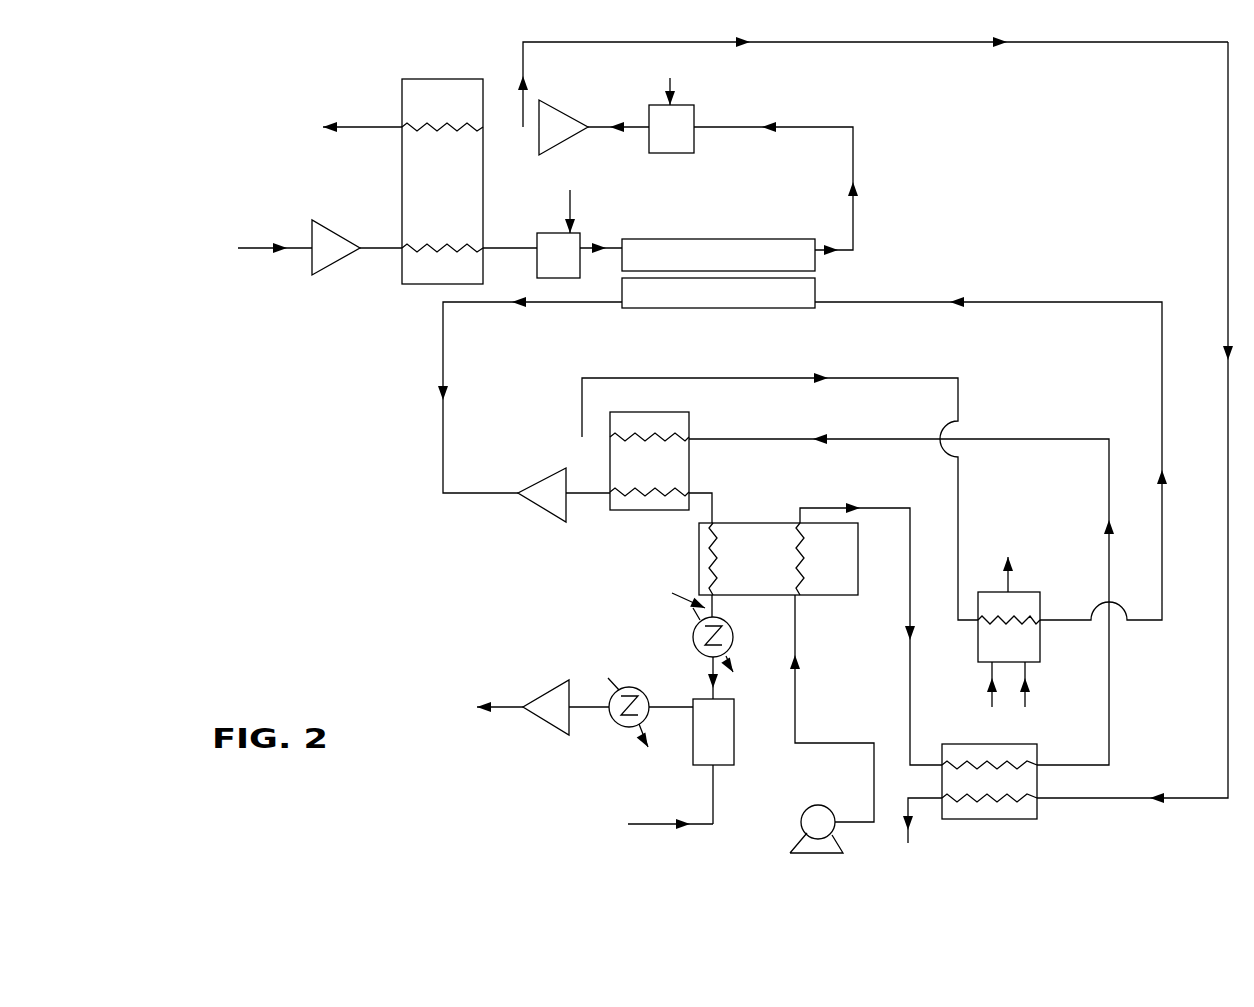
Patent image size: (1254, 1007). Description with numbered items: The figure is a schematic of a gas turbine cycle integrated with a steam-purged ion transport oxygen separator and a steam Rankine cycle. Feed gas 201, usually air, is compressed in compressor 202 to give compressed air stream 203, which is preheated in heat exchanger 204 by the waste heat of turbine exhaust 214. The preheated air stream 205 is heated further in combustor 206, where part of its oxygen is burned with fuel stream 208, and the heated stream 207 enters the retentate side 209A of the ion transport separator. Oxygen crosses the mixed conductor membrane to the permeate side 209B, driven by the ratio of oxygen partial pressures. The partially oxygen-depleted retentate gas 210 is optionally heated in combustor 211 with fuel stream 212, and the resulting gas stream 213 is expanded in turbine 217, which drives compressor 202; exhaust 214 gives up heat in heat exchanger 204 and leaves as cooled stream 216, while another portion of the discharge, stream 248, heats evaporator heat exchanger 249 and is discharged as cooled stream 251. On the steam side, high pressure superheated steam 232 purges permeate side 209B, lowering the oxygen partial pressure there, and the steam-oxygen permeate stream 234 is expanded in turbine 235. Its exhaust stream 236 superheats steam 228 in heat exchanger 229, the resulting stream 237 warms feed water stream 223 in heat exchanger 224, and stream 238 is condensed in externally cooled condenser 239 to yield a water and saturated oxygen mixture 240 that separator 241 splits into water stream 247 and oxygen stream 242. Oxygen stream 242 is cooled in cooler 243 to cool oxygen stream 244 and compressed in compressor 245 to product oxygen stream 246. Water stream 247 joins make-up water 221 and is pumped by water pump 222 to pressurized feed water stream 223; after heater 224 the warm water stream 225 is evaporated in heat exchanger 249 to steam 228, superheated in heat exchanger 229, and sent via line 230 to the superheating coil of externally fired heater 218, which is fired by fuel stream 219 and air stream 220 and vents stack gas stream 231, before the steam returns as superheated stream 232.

The feed gas 201 is at (255, 252).
The compressor 202 is at (340, 270).
The compressed air stream 203 is at (380, 250).
The heat exchanger 204 is at (483, 178).
The compressed and preheated air stream 205 is at (505, 247).
The combustor 206 is at (578, 268).
The heated stream 207 is at (620, 247).
The fuel stream 208 is at (588, 192).
The retentate side 209A is at (733, 266).
The permeate side 209B is at (695, 304).
The partially oxygen depleted retentate gas 210 is at (828, 127).
The combustor 211 is at (692, 141).
The fuel stream 212 is at (688, 75).
The gas stream 213 is at (637, 127).
The turbine exhaust 214 is at (507, 126).
The cooled stream 216 is at (372, 126).
The turbine 217 is at (572, 100).
The externally fired heater 218 is at (978, 640).
The fuel stream 219 is at (992, 705).
The air stream 220 is at (1025, 705).
The make-up water 221 is at (697, 828).
The water pump 222 is at (815, 805).
The pressurized feed water stream 223 is at (875, 740).
The feed water heater 224 is at (820, 597).
The warm water stream 225 is at (893, 507).
The high pressure steam 228 is at (1025, 438).
The heat exchanger 229 is at (689, 455).
The line 230 is at (905, 378).
The stack gas stream 231 is at (1010, 585).
The high pressure superheated steam 232 is at (1162, 505).
The permeate stream 234 is at (443, 320).
The turbine 235 is at (538, 505).
The exhaust stream 236 is at (585, 495).
The resulting stream 237 is at (705, 510).
The stream 238 is at (665, 591).
The externally cooled condenser 239 is at (693, 637).
The mixture of water and saturated oxygen 240 is at (708, 690).
The separator 241 is at (734, 730).
The oxygen stream 242 is at (667, 710).
The cooler 243 is at (612, 682).
The cool oxygen stream 244 is at (598, 712).
The compressor 245 is at (546, 690).
The product oxygen stream 246 is at (510, 710).
The water stream 247 is at (716, 292).
The stream 248 is at (1148, 43).
The evaporator heat exchanger 249 is at (1023, 819).
The cooled stream 251 is at (908, 835).